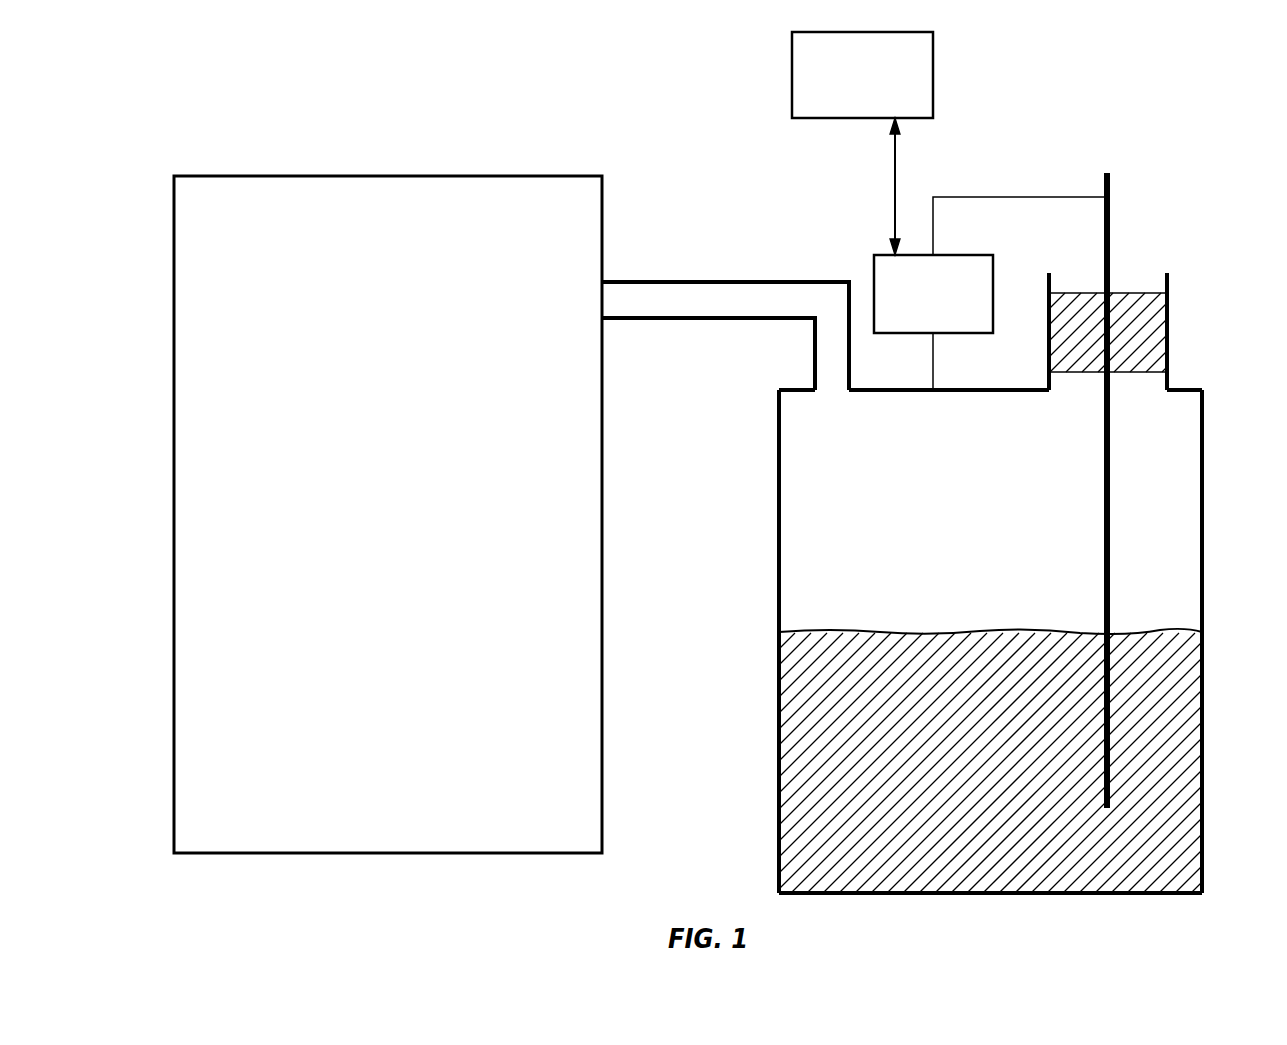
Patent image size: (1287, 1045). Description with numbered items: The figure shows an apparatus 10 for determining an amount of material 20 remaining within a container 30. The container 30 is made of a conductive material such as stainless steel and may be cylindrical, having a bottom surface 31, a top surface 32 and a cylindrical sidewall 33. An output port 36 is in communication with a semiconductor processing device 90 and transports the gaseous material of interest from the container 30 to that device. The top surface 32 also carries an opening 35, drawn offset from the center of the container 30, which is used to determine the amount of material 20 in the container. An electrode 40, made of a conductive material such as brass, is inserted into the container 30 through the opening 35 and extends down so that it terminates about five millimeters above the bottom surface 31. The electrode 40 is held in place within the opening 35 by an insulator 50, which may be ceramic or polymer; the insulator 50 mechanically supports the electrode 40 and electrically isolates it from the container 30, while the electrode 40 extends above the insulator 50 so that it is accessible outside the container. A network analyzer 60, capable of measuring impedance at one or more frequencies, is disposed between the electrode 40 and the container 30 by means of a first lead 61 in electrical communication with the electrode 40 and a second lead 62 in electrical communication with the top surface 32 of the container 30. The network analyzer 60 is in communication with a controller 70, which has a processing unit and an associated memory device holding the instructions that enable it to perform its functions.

The apparatus 10 is at (1212, 176).
The material 20 is at (815, 788).
The container 30 is at (1222, 536).
The bottom surface 31 is at (1108, 893).
The top surface 32 is at (904, 389).
The cylindrical sidewall 33 is at (778, 507).
The opening 35 is at (1155, 258).
The output port 36 is at (744, 281).
The electrode 40 is at (1104, 551).
The insulator 50 is at (1170, 331).
The network analyzer 60 is at (919, 307).
The first lead 61 is at (1053, 197).
The second lead 62 is at (934, 382).
The controller 70 is at (848, 93).
The semiconductor processing device 90 is at (371, 527).